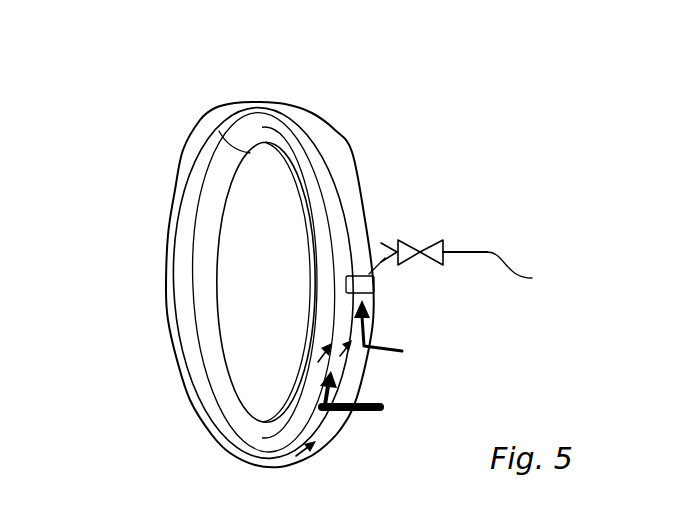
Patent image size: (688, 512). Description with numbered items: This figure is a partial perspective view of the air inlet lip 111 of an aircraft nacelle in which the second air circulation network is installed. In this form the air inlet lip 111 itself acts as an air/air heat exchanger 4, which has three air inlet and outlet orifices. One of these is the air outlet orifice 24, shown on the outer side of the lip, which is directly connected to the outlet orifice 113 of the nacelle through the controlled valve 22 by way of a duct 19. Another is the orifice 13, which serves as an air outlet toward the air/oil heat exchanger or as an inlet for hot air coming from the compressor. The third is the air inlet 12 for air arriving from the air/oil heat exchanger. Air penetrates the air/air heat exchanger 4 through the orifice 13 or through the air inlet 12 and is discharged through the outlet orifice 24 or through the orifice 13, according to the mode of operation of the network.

The air inlet lip 111 is at (162, 113).
The air/air heat exchanger 4 is at (252, 95).
The air outlet orifice 24 is at (366, 275).
The controlled valve 22 is at (417, 232).
The duct 19 is at (466, 251).
The outlet orifice 113 is at (528, 272).
The air inlet 12 is at (402, 351).
The orifice 13 is at (380, 407).